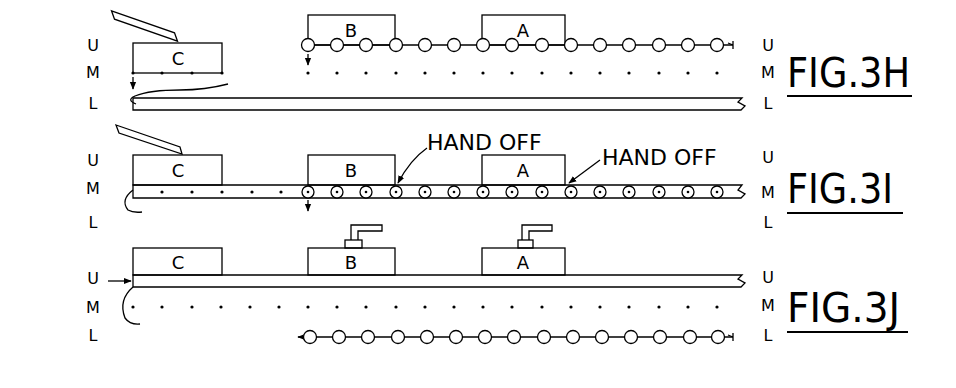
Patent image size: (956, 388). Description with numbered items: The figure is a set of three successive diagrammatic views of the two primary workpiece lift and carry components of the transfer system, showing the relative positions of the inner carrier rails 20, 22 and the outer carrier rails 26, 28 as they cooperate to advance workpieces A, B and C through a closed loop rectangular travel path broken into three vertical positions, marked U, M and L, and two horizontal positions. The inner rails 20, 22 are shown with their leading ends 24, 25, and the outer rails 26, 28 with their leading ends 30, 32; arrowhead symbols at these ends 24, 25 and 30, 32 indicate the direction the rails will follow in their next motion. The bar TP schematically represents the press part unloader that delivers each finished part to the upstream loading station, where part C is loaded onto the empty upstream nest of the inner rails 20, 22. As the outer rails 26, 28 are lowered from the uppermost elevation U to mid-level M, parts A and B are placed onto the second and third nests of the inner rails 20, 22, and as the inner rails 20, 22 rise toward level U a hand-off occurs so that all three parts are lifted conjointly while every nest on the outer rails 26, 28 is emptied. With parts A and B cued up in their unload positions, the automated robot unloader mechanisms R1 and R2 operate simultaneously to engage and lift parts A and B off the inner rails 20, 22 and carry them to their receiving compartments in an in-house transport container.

In FIG. 3H, the inner carrier rail 20 is at (439, 92).
In FIG. 3I, the inner carrier rail 20 is at (439, 211).
In FIG. 3J, the inner carrier rail 20 is at (439, 267).
In FIG. 3H, the inner carrier rail 22 is at (464, 98).
In FIG. 3I, the inner carrier rail 22 is at (238, 201).
In FIG. 3J, the inner carrier rail 22 is at (298, 273).
In FIG. 3H, the leading end of inner carrier rail 24 is at (211, 86).
In FIG. 3I, the leading end of inner carrier rail 24 is at (167, 208).
In FIG. 3J, the leading end of inner carrier rail 24 is at (164, 315).
In FIG. 3H, the leading end of inner carrier rail 25 is at (211, 86).
In FIG. 3I, the leading end of inner carrier rail 25 is at (167, 208).
In FIG. 3J, the leading end of inner carrier rail 25 is at (164, 315).
In FIG. 3H, the outer carrier rail 26 is at (517, 28).
In FIG. 3I, the outer carrier rail 26 is at (527, 156).
In FIG. 3J, the outer carrier rail 26 is at (515, 356).
In FIG. 3H, the outer carrier rail 28 is at (600, 38).
In FIG. 3I, the outer carrier rail 28 is at (546, 183).
In FIG. 3J, the outer carrier rail 28 is at (409, 345).
In FIG. 3H, the leading end of outer rail 30 is at (274, 31).
In FIG. 3I, the leading end of outer rail 30 is at (277, 160).
In FIG. 3J, the leading end of outer rail 30 is at (273, 354).
In FIG. 3H, the leading end of outer rail 32 is at (303, 41).
In FIG. 3I, the leading end of outer rail 32 is at (305, 185).
In FIG. 3J, the leading end of outer rail 32 is at (313, 345).
In FIG. 3H, the part unloader bar TP is at (164, 28).
In FIG. 3I, the part unloader bar TP is at (169, 141).
In FIG. 3J, the automated robot unloader mechanism R1 is at (518, 229).
In FIG. 3J, the automated robot unloader mechanism R2 is at (384, 232).